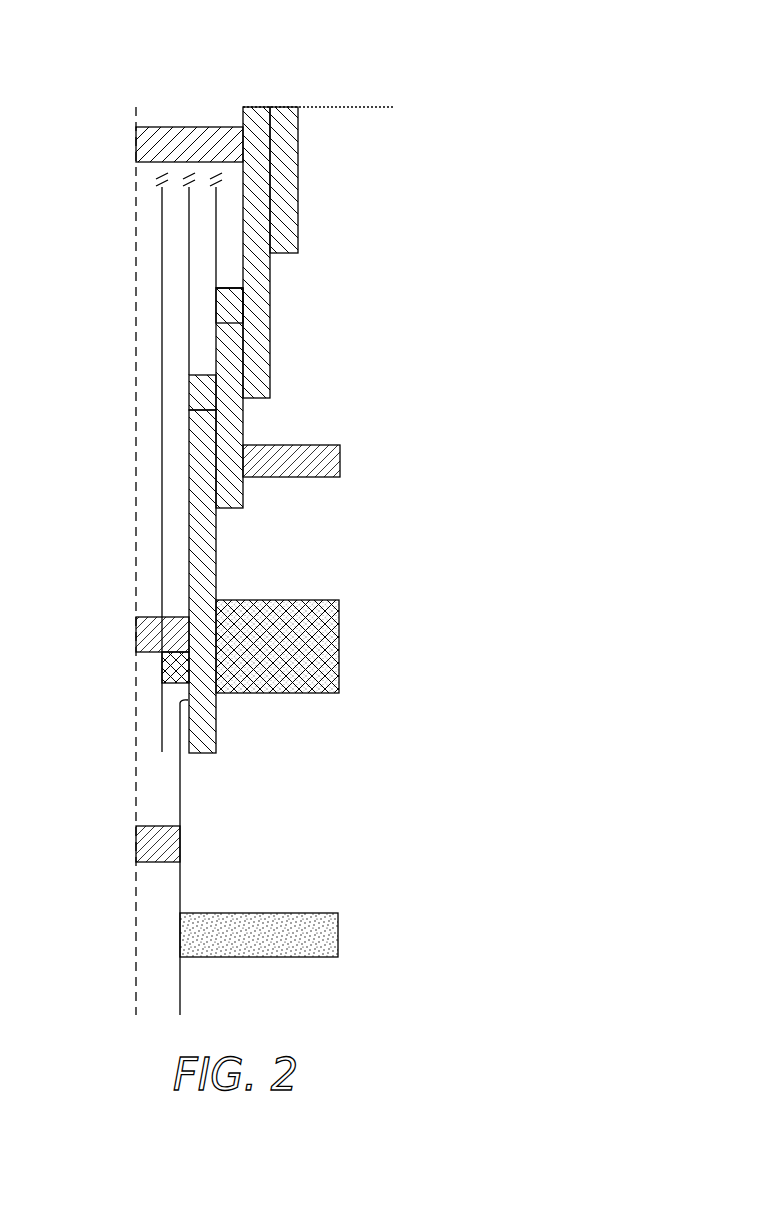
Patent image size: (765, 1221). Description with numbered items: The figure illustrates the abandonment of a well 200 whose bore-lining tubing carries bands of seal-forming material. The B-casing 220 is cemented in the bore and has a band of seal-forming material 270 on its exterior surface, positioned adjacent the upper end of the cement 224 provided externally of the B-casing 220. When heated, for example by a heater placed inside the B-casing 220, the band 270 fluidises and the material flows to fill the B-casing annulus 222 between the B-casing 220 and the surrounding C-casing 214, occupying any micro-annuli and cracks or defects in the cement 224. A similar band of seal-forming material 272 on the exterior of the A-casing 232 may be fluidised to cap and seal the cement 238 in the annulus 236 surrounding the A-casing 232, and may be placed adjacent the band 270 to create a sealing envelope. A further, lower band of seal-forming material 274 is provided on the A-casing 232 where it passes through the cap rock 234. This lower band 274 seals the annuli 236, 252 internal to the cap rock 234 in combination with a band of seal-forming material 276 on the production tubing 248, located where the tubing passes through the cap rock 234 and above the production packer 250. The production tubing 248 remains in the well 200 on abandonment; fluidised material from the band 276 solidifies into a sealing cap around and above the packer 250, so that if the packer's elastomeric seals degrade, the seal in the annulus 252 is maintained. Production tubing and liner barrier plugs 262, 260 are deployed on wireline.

The well 200 is at (136, 63).
The C-casing 214 is at (245, 188).
The B-casing annulus 222 is at (229, 263).
The B-casing 220 is at (218, 345).
The band of seal-forming material 270 is at (234, 301).
The band of seal-forming material 272 is at (205, 388).
The cement 224 is at (245, 432).
The A-casing 232 is at (191, 552).
The annulus 236 is at (208, 520).
The cement 238 is at (205, 588).
The cap rock 234 is at (340, 648).
The band of seal-forming material 274 is at (232, 688).
The production tubing barrier plug 262 is at (136, 632).
The band of seal-forming material 276 is at (160, 610).
The production packer 250 is at (160, 665).
The annulus 252 is at (175, 541).
The production tubing 248 is at (160, 738).
The liner barrier plug 260 is at (182, 843).